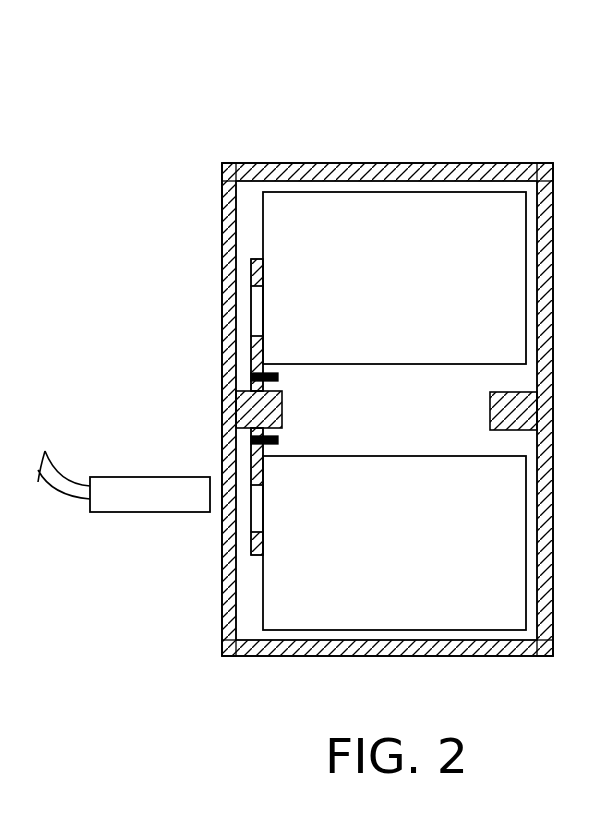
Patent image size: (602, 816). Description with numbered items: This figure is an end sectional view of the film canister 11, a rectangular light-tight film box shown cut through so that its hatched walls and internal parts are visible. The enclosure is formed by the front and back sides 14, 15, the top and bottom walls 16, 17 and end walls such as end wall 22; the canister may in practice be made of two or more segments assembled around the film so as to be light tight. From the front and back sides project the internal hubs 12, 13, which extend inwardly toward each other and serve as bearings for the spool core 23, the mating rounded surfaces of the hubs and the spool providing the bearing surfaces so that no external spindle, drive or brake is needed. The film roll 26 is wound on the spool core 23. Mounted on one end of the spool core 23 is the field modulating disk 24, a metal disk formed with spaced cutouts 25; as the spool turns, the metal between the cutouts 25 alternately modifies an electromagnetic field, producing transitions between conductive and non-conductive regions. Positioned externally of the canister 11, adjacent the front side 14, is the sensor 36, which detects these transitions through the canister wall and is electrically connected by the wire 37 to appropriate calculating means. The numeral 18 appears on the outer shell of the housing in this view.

The film canister 11 is at (336, 124).
The internal hub 12 is at (273, 403).
The internal hub 13 is at (498, 410).
The front side 14 is at (222, 261).
The back side 15 is at (541, 283).
The top wall 16 is at (378, 163).
The bottom wall 17 is at (399, 645).
The housing 18 is at (471, 162).
The end wall 22 is at (250, 208).
The spool core 23 is at (392, 422).
The field modulating disk 24 is at (252, 360).
The cutouts 25 is at (256, 313).
The film roll 26 is at (396, 339).
The sensor 36 is at (147, 497).
The wire 37 is at (63, 485).